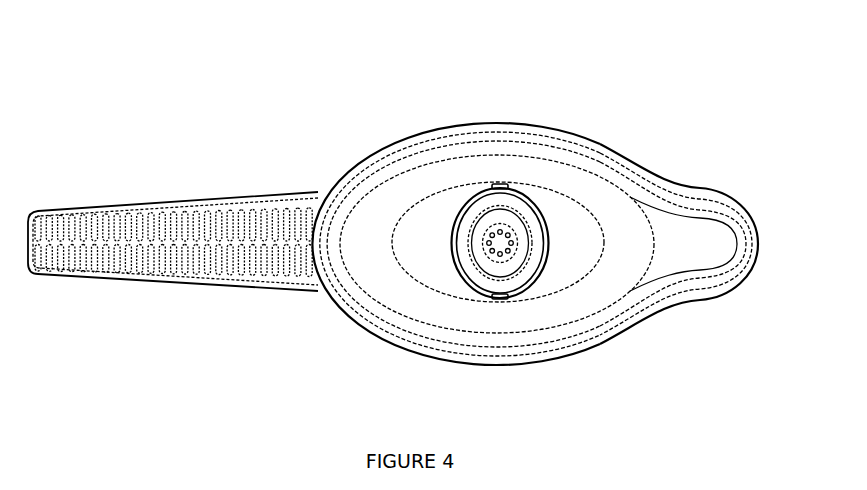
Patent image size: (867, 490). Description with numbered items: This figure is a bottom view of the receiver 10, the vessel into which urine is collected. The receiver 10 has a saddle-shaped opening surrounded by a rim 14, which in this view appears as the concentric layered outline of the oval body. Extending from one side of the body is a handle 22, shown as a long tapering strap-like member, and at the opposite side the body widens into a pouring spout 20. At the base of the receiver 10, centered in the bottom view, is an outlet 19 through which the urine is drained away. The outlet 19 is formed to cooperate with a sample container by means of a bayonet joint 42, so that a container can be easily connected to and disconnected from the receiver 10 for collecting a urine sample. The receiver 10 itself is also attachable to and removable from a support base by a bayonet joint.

The receiver 10 is at (577, 190).
The rim 14 is at (486, 122).
The outlet 19 is at (517, 248).
The pouring spout 20 is at (718, 240).
The handle 22 is at (128, 222).
The bayonet joint 42 is at (504, 298).